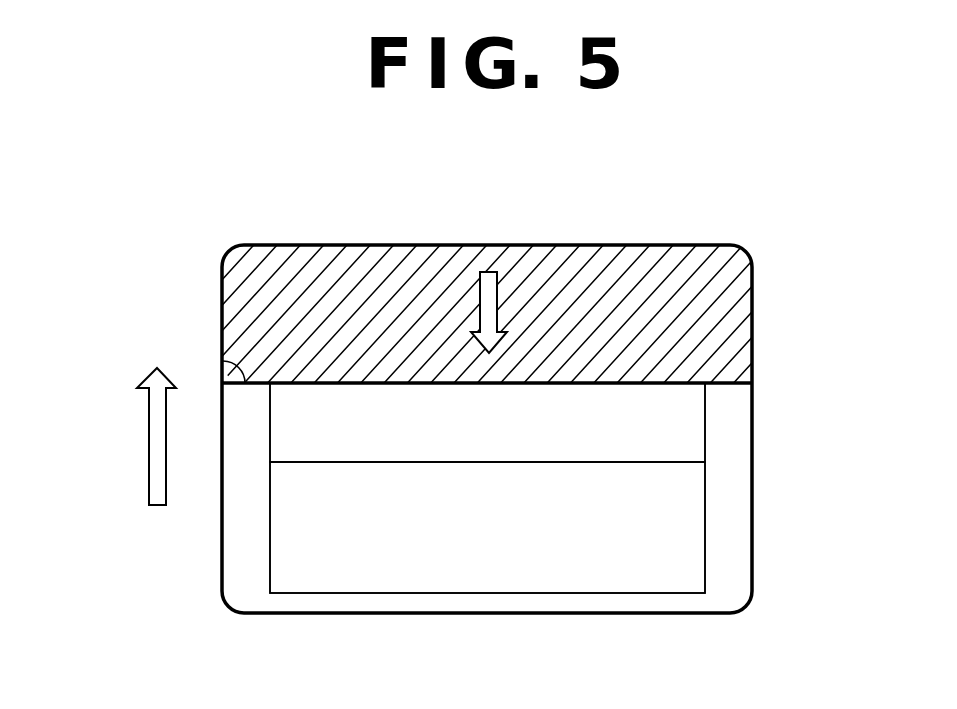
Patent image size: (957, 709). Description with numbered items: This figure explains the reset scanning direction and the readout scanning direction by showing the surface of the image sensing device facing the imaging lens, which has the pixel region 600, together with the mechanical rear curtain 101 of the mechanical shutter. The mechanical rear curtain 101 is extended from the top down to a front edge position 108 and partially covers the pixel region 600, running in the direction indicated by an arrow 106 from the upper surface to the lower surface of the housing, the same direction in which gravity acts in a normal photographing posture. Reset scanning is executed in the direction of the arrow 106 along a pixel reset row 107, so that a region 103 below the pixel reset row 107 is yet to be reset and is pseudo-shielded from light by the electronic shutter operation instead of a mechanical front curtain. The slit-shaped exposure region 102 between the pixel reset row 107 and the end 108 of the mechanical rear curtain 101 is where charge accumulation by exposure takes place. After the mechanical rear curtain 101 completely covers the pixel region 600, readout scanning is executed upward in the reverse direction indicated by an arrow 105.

The mechanical rear curtain 101 is at (743, 304).
The exposure region 102 is at (695, 425).
The region below the pixel reset row 103 is at (695, 527).
The arrow indicating readout scanning direction 105 is at (149, 443).
The arrow indicating running direction 106 is at (480, 313).
The pixel reset row 107 is at (320, 462).
The front edge position of the mechanical rear curtain 108 is at (222, 362).
The pixel region 600 is at (393, 593).